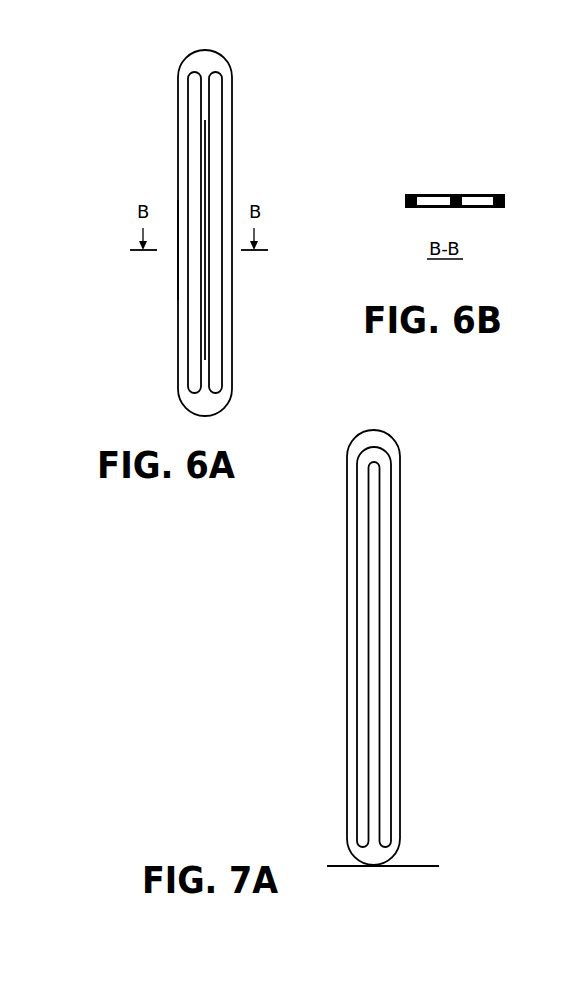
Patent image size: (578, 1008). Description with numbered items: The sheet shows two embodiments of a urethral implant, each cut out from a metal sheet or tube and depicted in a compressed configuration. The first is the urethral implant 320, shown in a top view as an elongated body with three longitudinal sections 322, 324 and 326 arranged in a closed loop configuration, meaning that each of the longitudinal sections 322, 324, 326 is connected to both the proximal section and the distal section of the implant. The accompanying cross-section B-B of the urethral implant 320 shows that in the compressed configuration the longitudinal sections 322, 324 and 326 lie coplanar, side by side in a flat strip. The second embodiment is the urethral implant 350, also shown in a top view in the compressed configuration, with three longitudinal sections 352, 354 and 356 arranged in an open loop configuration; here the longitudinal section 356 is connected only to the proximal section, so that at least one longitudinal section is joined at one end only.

In FIG. 6A, the urethral implant 320 is at (220, 233).
In FIG. 6B, the urethral implant 320 is at (463, 133).
In FIG. 6A, the longitudinal section 322 is at (178, 346).
In FIG. 6B, the longitudinal section 322 is at (495, 194).
In FIG. 6A, the longitudinal section 324 is at (232, 346).
In FIG. 6B, the longitudinal section 324 is at (408, 194).
In FIG. 6A, the longitudinal section 326 is at (214, 372).
In FIG. 6B, the longitudinal section 326 is at (449, 194).
In FIG. 7A, the urethral implant 350 is at (364, 648).
In FIG. 7A, the longitudinal section 352 is at (357, 618).
In FIG. 7A, the longitudinal section 354 is at (400, 543).
In FIG. 7A, the longitudinal section 356 is at (379, 713).